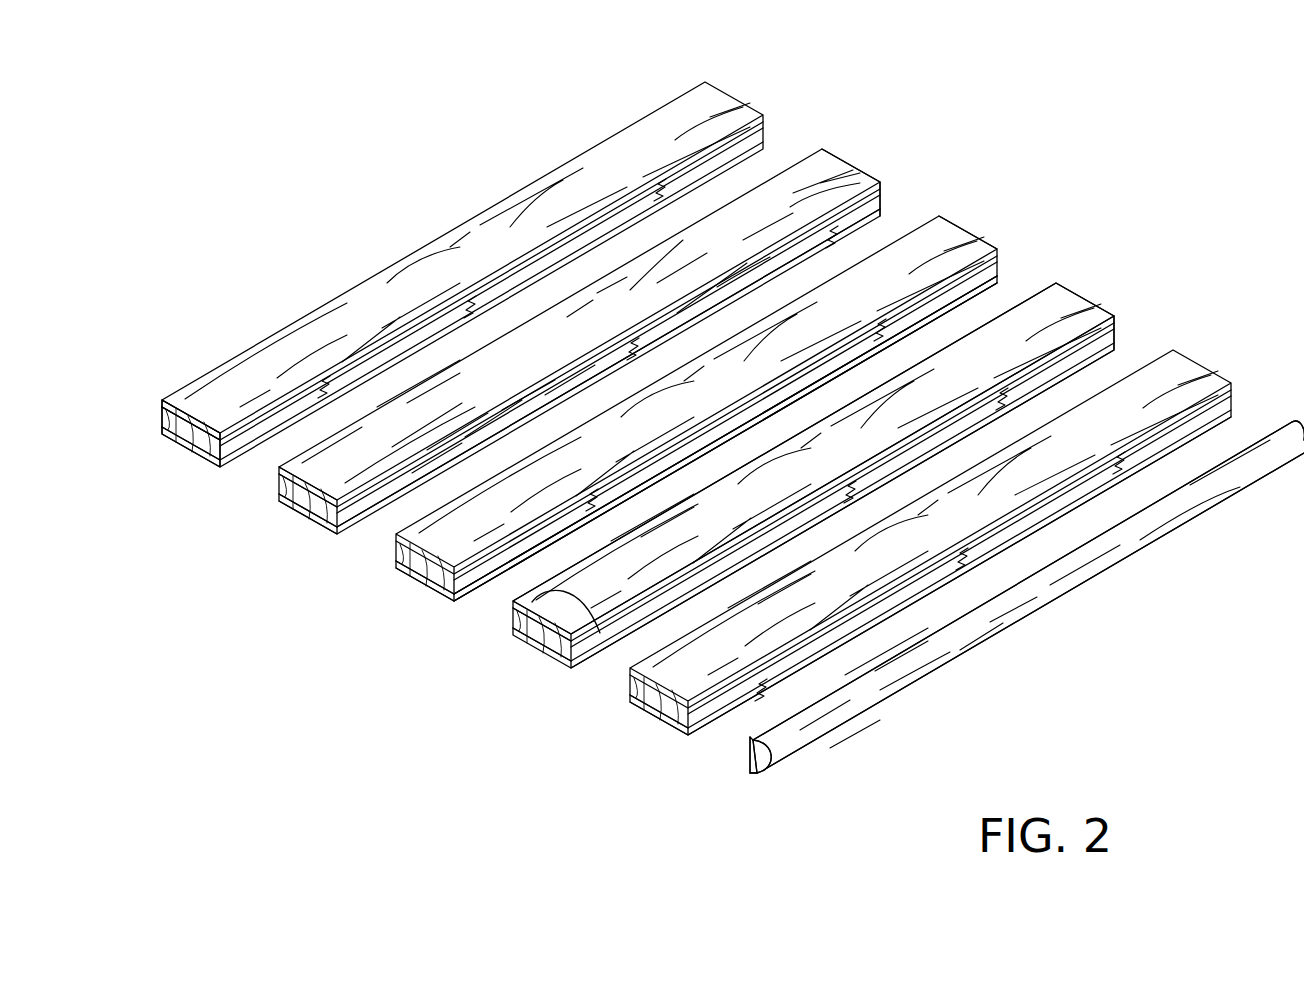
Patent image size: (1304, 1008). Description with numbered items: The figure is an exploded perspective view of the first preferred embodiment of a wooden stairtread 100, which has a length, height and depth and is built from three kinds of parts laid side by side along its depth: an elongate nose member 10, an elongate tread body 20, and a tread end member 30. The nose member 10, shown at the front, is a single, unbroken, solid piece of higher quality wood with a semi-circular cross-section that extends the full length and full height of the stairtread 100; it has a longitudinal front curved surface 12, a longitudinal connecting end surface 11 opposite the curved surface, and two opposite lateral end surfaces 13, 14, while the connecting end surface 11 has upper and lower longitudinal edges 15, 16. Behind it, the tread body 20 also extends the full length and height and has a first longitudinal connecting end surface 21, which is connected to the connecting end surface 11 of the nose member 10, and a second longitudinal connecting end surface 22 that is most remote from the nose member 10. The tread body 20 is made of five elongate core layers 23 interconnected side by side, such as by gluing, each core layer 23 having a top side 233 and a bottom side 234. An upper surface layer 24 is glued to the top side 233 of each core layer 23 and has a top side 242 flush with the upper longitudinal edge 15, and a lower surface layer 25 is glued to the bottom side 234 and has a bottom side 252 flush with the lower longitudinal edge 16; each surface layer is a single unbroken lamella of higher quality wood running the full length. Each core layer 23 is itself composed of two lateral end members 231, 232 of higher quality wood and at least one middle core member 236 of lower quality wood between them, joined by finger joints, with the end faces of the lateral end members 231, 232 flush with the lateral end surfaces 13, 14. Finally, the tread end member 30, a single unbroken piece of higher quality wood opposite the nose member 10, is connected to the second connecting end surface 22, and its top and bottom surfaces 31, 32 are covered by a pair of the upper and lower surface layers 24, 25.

The wooden stairtread 100 is at (357, 232).
The elongate nose member 10 is at (1033, 652).
The longitudinal connecting end surface 11 is at (745, 755).
The longitudinal front curved surface 12 is at (815, 735).
The lateral end surface 13 is at (763, 772).
The lateral end surface 14 is at (1290, 430).
The upper longitudinal edge 15 is at (773, 728).
The lower longitudinal edge 16 is at (752, 775).
The elongate tread body 20 is at (397, 618).
The first longitudinal connecting end surface 21 is at (706, 736).
The second longitudinal connecting end surface 22 is at (188, 444).
The elongate core layer 23 is at (433, 592).
The upper surface layer 24 is at (545, 612).
The lower surface layer 25 is at (537, 632).
The lateral end member 231 is at (490, 592).
The lateral end member 232 is at (1100, 343).
The top side 233 is at (280, 468).
The bottom side 234 is at (300, 513).
The middle core member 236 is at (940, 438).
The top side 242 is at (957, 240).
The bottom side 252 is at (867, 228).
The tread end member 30 is at (150, 426).
The top surface 31 is at (160, 398).
The bottom surface 32 is at (167, 437).